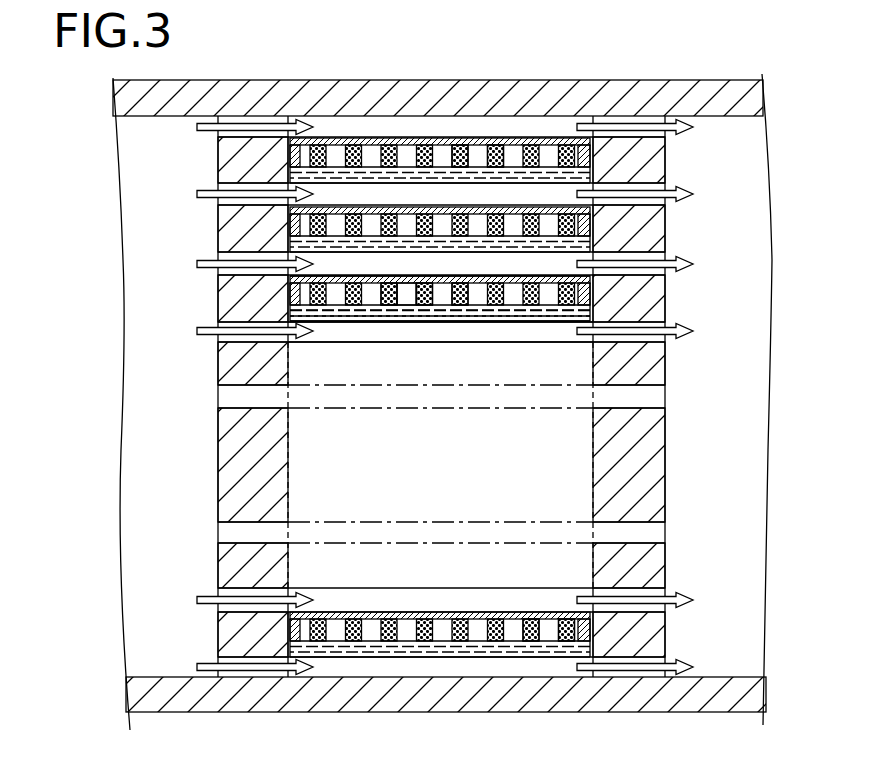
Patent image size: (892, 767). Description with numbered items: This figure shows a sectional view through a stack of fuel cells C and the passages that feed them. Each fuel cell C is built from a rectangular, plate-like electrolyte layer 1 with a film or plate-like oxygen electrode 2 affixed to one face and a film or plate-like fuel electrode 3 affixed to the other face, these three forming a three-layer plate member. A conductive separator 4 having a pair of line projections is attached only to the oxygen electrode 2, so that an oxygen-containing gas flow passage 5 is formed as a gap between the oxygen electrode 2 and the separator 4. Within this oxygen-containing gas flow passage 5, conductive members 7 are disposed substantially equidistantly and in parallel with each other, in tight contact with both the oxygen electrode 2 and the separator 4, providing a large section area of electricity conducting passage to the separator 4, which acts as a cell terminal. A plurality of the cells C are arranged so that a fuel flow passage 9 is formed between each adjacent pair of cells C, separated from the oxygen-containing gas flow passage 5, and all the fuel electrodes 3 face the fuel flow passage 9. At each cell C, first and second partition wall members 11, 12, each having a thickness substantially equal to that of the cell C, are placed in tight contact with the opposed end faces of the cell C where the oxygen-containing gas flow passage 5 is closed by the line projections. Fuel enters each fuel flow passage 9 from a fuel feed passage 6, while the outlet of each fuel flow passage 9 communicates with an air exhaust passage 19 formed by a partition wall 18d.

The electrolyte layer 1 is at (547, 320).
The oxygen electrode 2 is at (568, 323).
The fuel electrode 3 is at (538, 320).
The conductive separator 4 is at (517, 278).
The oxygen-containing gas flow passage 5 is at (471, 156).
The fuel feed passage 6 is at (166, 402).
The conductive members 7 is at (415, 303).
The fuel flow passage 9 is at (361, 262).
The first partition wall member 11 is at (212, 222).
The second partition wall member 12 is at (670, 635).
The air exhaust passage 19 is at (713, 410).
The partition wall 18d is at (130, 492).
The fuel cell C is at (424, 194).